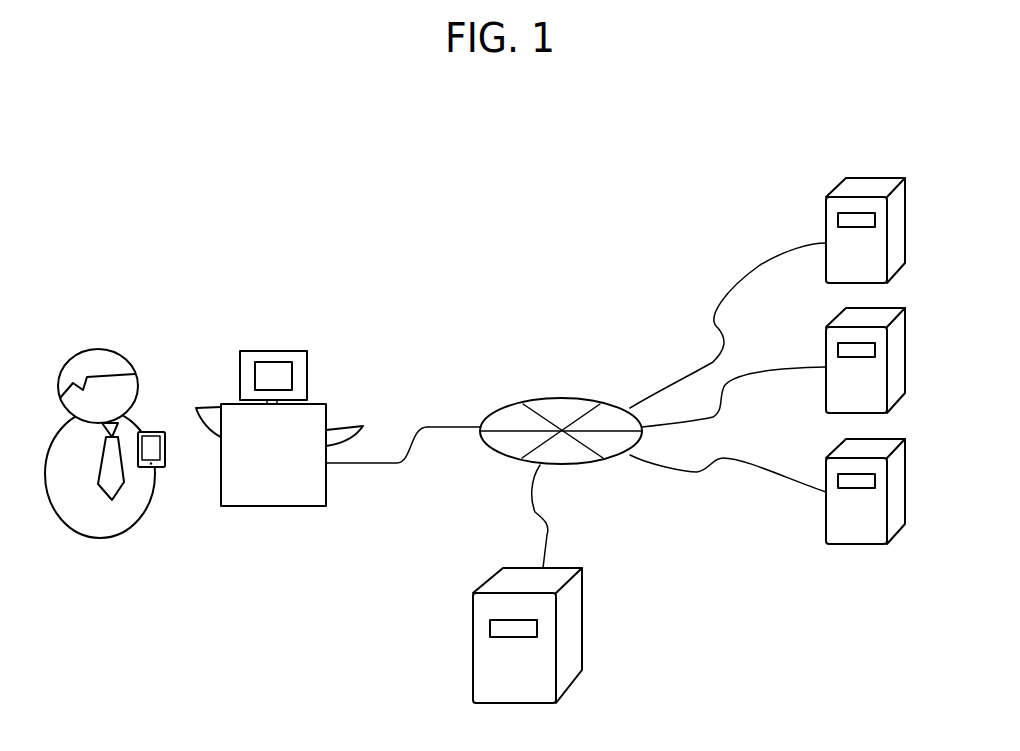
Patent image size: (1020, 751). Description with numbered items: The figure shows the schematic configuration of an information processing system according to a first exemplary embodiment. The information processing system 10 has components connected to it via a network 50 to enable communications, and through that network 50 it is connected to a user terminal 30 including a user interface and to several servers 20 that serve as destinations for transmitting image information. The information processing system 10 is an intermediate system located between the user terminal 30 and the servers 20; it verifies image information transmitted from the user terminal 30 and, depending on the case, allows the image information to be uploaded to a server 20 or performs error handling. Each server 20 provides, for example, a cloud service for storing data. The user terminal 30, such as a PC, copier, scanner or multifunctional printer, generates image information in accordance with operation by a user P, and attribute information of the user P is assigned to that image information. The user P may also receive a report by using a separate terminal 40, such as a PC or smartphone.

The information processing system 10 is at (593, 563).
The server 20 is at (907, 211).
The user terminal 30 is at (313, 404).
The terminal 40 is at (152, 432).
The network 50 is at (553, 398).
The user P is at (108, 345).